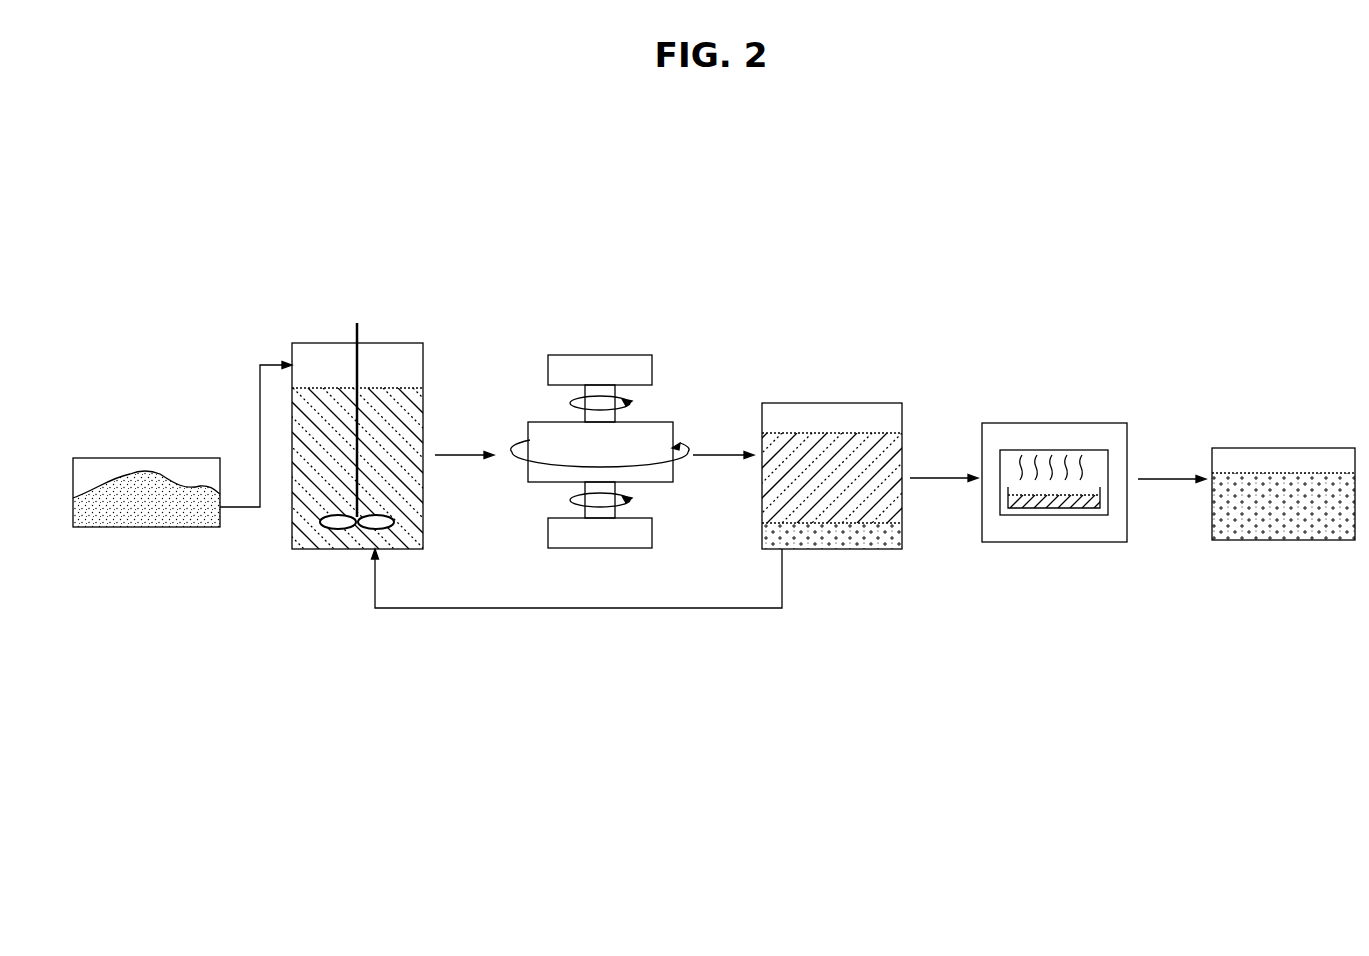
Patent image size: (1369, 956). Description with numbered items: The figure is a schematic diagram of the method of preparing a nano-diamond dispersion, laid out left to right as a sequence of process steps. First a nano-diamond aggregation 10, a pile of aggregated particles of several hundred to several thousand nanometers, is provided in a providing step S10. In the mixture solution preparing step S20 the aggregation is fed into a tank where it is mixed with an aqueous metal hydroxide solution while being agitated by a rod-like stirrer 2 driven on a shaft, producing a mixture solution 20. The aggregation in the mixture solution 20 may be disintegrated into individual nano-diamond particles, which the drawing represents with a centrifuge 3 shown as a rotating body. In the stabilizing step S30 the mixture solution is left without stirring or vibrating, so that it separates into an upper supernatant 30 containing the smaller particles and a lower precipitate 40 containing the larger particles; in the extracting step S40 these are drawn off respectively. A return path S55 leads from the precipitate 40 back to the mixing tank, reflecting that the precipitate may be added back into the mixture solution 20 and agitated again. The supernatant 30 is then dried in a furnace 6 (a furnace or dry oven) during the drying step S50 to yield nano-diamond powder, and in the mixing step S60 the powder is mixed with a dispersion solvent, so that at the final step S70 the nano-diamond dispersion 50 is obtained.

The nano-diamond aggregation 10 is at (148, 527).
The mixture solution 20 is at (408, 407).
The stirrer 2 is at (338, 530).
The centrifuge 3 is at (650, 420).
The supernatant 30 is at (863, 513).
The precipitate 40 is at (818, 540).
The drying furnace 6 is at (1057, 423).
The nano-diamond dispersion 50 is at (1288, 533).
The providing step S10 is at (142, 308).
The mixture solution preparing step S20 is at (375, 308).
The stabilizing step S30 is at (617, 308).
The extracting step S40 is at (834, 308).
The drying step S50 is at (834, 507).
The recycling step S55 is at (562, 618).
The mixing step S60 is at (1059, 308).
The product obtaining step S70 is at (1269, 308).